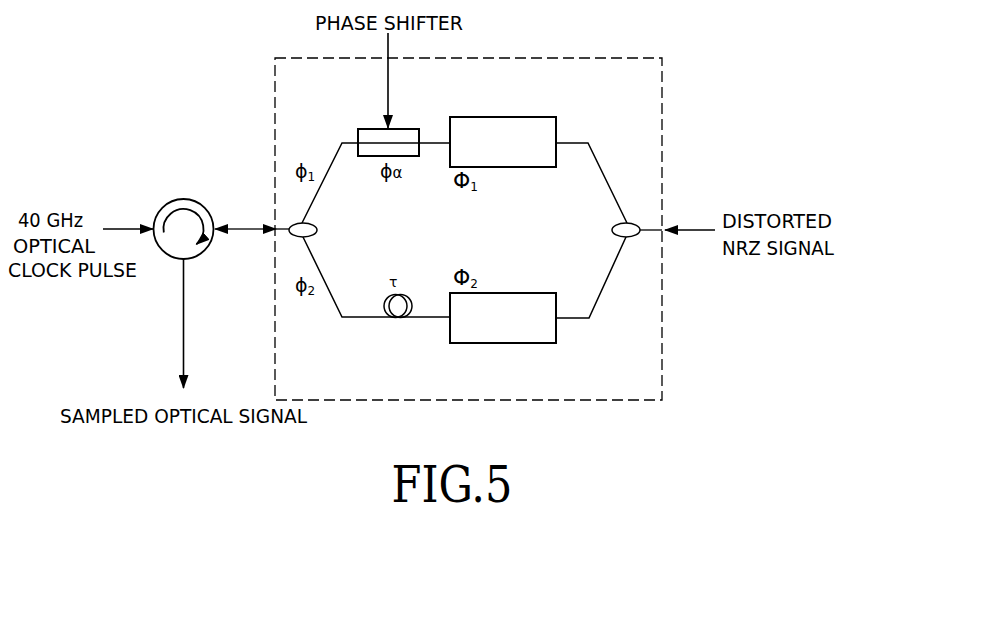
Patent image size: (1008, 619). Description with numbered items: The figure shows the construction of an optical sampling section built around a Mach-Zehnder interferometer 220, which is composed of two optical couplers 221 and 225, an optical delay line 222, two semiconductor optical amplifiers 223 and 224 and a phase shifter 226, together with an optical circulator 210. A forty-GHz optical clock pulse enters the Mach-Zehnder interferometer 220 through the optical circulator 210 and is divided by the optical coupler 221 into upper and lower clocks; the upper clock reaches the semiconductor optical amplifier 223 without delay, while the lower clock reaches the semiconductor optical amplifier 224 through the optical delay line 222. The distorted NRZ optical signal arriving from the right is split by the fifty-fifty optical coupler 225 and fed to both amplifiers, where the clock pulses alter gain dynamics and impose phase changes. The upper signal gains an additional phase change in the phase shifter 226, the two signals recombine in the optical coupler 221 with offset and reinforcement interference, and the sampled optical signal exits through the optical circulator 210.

The optical circulator 210 is at (183, 199).
The Mach-Zehnder interferometer 220 is at (597, 58).
The optical coupler 221 is at (318, 230).
The optical delay line 222 is at (398, 318).
The semiconductor optical amplifier 223 is at (503, 117).
The semiconductor optical amplifier 224 is at (505, 344).
The optical coupler 225 is at (612, 230).
The phase shifter 226 is at (367, 128).